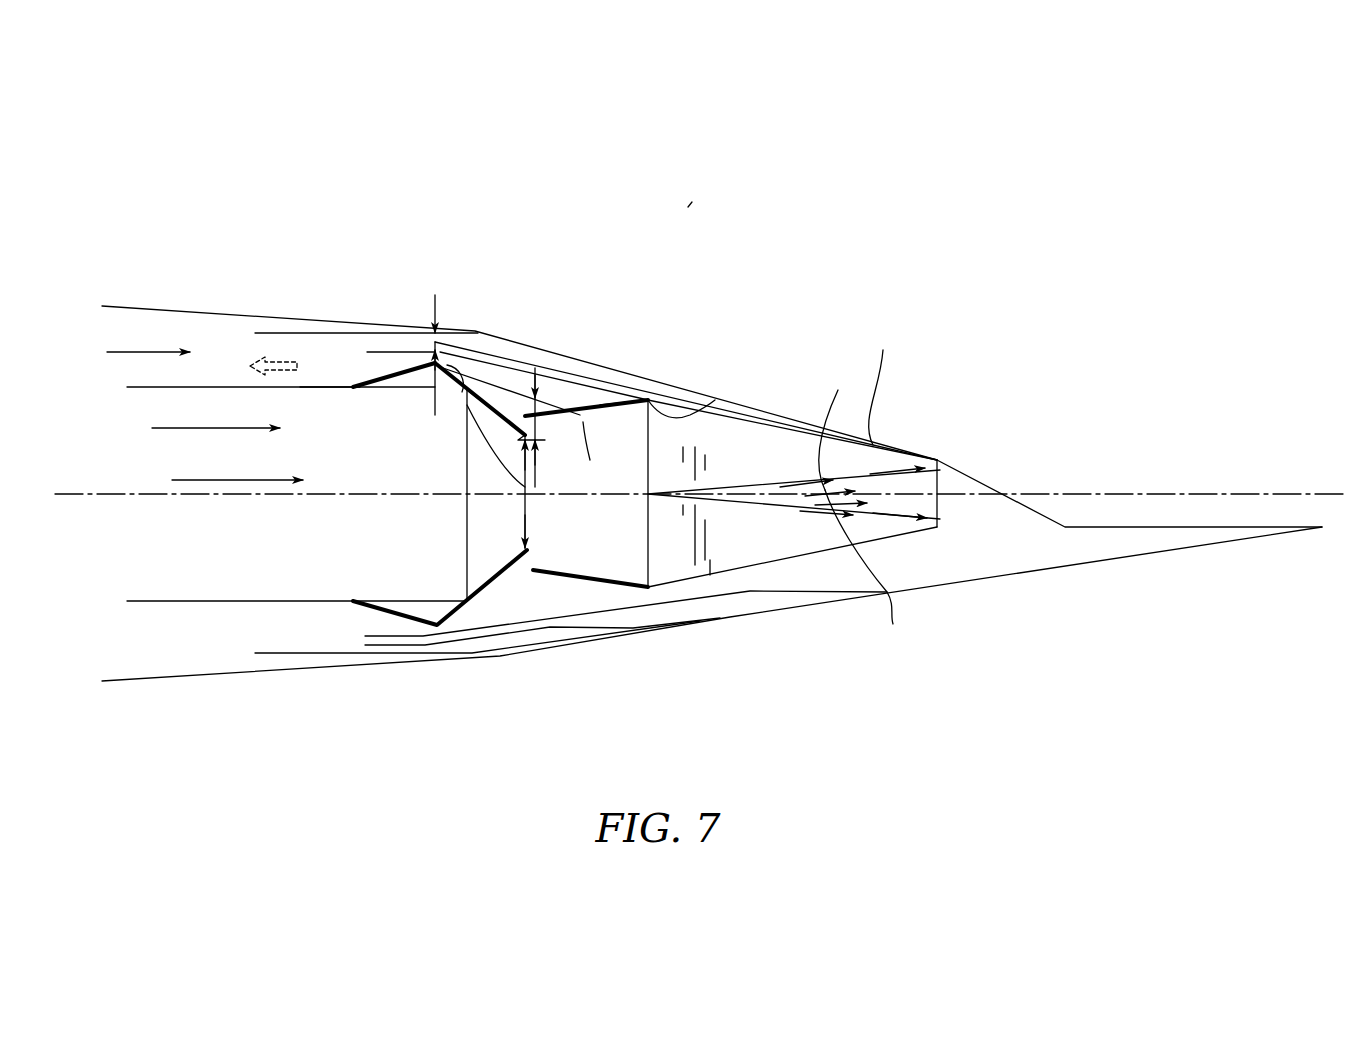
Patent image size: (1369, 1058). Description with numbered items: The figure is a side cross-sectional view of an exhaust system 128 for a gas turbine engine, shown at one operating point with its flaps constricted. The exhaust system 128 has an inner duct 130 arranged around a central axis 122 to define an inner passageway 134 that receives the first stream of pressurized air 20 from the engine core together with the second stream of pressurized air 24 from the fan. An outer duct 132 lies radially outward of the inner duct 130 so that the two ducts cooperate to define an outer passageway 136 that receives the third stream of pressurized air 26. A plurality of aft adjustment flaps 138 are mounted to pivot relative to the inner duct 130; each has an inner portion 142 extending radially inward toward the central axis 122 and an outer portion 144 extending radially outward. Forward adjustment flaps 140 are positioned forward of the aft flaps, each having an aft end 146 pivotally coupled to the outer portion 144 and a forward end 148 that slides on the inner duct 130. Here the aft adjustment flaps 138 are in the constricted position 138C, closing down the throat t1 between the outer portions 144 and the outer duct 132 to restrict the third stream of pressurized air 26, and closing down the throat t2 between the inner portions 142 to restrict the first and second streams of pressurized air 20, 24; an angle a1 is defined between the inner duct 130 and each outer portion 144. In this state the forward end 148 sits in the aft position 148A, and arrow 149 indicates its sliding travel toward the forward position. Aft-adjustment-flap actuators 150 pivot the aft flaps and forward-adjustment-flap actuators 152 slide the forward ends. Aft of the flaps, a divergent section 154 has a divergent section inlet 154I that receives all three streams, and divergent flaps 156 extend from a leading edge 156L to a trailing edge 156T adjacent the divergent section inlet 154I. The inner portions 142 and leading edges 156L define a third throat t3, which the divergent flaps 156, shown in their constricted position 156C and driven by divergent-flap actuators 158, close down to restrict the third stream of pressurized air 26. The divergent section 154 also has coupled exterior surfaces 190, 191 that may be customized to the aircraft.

The first stream of pressurized air 20 is at (232, 481).
The second stream of pressurized air 24 is at (175, 427).
The third stream of pressurized air 26 is at (133, 350).
The central axis 122 is at (106, 497).
The exhaust system 128 is at (688, 206).
The inner duct 130 is at (305, 392).
The outer duct 132 is at (117, 298).
The inner passageway 134 is at (145, 480).
The outer passageway 136 is at (205, 362).
The aft adjustment flaps 138 is at (498, 386).
The constricted position 138C is at (508, 382).
The forward adjustment flaps 140 is at (397, 350).
The inner portion 142 is at (612, 397).
The outer portion 144 is at (474, 371).
The aft end 146 is at (433, 295).
The forward end 148 is at (370, 350).
The aft position 148A is at (317, 385).
The arrow 149 is at (273, 357).
The aft-adjustment-flap actuator 150 is at (460, 405).
The forward-adjustment-flap actuator 152 is at (357, 395).
The divergent section 154 is at (735, 392).
The divergent section inlet 154I is at (652, 433).
The divergent flaps 156 is at (606, 402).
The trailing edge 156T is at (718, 398).
The constricted position 156C is at (612, 397).
The leading edge 156L is at (590, 561).
The divergent-flap actuator 158 is at (584, 424).
The exterior surface 190 is at (888, 384).
The exterior surface 191 is at (757, 612).
The throat t1 is at (452, 307).
The throat t2 is at (475, 497).
The third throat t3 is at (485, 447).
The angle a1 is at (484, 377).